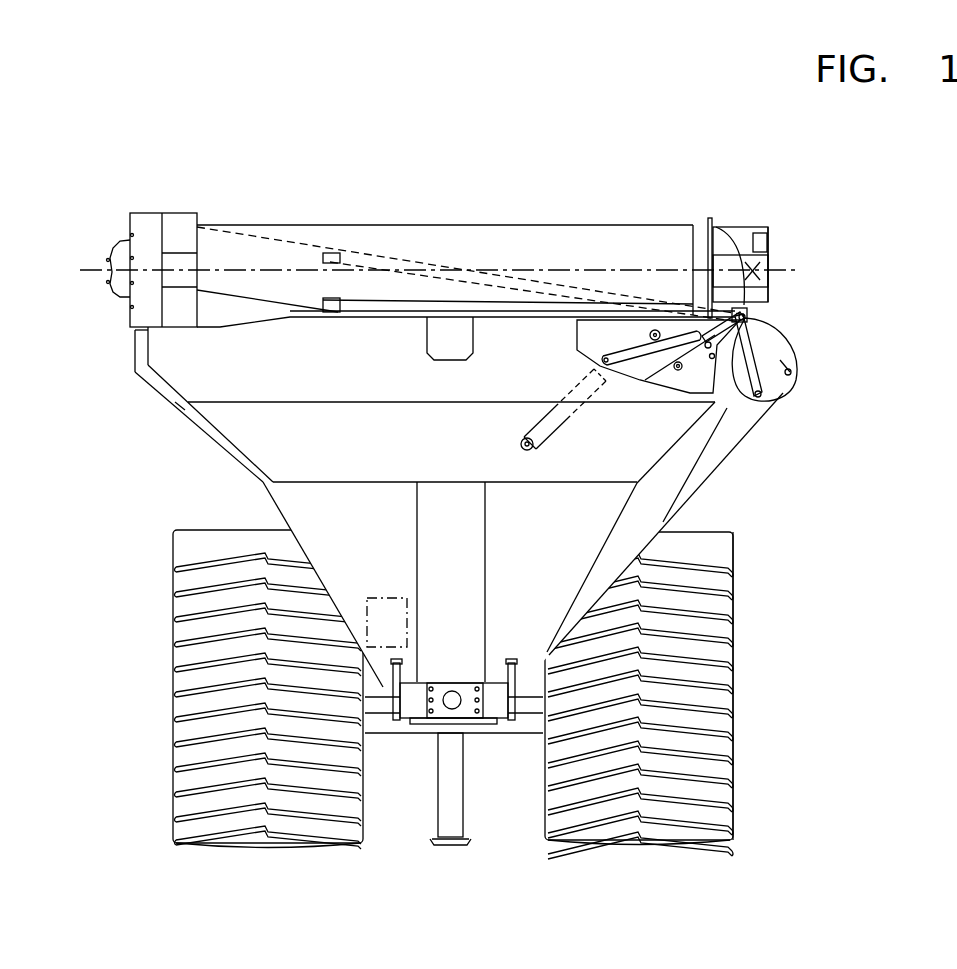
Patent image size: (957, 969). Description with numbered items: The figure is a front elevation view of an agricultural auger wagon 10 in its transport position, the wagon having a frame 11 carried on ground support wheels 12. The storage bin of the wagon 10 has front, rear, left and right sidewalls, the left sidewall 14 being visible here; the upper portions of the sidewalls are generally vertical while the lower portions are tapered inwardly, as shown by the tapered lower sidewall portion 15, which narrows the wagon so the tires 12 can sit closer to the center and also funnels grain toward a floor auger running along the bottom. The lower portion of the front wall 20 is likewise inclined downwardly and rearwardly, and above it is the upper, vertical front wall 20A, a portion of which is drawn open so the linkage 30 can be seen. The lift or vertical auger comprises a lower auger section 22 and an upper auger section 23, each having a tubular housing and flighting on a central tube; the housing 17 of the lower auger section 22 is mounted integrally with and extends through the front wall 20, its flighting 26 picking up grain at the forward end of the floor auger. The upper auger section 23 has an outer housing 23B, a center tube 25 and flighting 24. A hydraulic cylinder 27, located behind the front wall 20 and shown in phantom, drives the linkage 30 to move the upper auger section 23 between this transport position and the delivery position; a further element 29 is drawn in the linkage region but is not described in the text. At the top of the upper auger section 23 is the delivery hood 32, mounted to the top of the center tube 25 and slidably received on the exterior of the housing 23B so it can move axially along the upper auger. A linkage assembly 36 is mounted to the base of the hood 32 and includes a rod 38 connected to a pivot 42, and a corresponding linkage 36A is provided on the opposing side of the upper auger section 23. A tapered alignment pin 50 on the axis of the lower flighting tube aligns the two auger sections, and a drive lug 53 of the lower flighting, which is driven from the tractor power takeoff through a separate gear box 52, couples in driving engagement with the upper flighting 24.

The auger wagon 10 is at (78, 336).
The frame 11 is at (486, 777).
The ground support wheels 12 is at (453, 665).
The left sidewall 14 is at (801, 258).
The tapered lower sidewall portion 15 is at (175, 438).
The housing 17 is at (707, 524).
The front wall 20 is at (468, 459).
The upper vertical front wall 20A is at (348, 379).
The lower auger section 22 is at (740, 497).
The upper auger section 23 is at (445, 243).
The upper auger housing 23B is at (445, 182).
The auger flighting 24 is at (775, 234).
The center tube 25 is at (788, 260).
The auger flighting 26 is at (797, 381).
The hydraulic cylinder 27 is at (782, 686).
The pivot bracket 29 is at (707, 430).
The linkage 30 is at (556, 397).
The delivery hood 32 is at (169, 241).
The linkage assembly 36 is at (503, 240).
The linkage 36A is at (468, 209).
The rod 38 is at (440, 229).
The pivot 42 is at (787, 310).
The tapered alignment pin 50 is at (821, 359).
The gear box 52 is at (332, 759).
The drive lug 53 is at (835, 386).